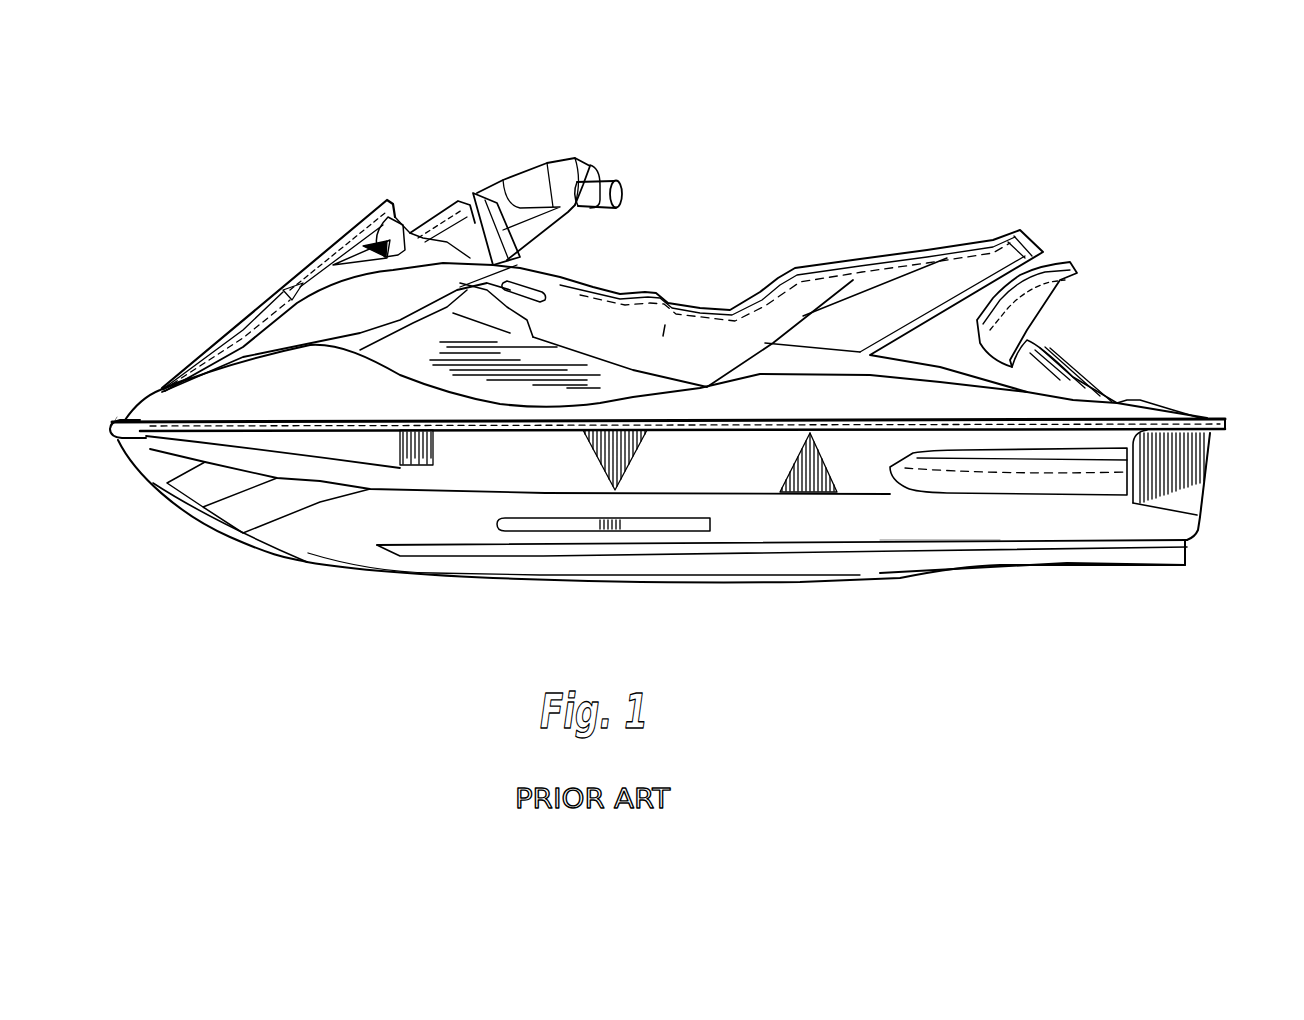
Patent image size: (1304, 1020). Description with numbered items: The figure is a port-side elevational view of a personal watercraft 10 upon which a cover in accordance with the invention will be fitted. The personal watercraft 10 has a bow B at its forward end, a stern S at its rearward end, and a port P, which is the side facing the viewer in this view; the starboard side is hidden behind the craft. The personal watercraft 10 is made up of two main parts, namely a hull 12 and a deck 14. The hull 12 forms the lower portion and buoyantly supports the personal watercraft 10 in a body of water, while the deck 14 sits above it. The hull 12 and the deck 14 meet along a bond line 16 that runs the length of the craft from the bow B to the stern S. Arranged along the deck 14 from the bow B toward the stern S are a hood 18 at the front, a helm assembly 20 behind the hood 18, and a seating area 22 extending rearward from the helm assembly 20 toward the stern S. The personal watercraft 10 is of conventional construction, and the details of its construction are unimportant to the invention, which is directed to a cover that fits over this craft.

The personal watercraft 10 is at (288, 212).
The hull 12 is at (320, 533).
The deck 14 is at (604, 292).
The bond line 16 is at (470, 420).
The hood 18 is at (300, 262).
The helm assembly 20 is at (527, 175).
The seating area 22 is at (655, 297).
The bow B is at (100, 430).
The stern S is at (1228, 453).
The port P is at (941, 518).